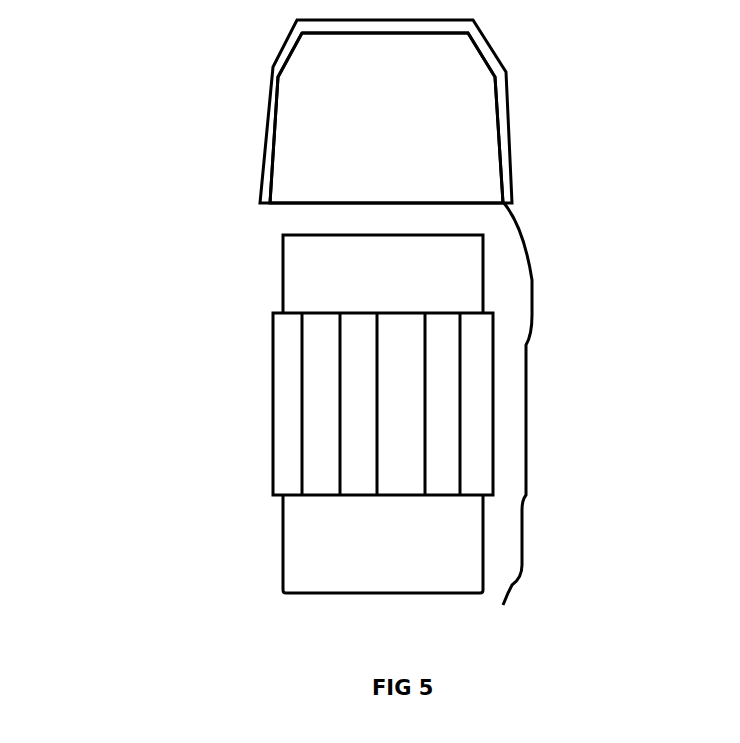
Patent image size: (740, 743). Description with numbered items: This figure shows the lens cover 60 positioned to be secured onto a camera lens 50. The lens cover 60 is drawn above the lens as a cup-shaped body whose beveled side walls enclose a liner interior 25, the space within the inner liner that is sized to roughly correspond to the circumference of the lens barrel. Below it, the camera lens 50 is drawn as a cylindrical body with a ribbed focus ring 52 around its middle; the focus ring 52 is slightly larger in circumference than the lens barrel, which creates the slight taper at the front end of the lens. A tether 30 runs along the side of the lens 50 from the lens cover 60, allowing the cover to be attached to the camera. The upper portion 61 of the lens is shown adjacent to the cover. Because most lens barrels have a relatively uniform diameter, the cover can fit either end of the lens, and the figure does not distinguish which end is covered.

The lens cover 60 is at (252, 72).
The liner interior 25 is at (395, 163).
The upper body portion 61 is at (355, 244).
The focus ring 52 is at (448, 380).
The camera lens 50 is at (346, 414).
The tether 30 is at (539, 430).